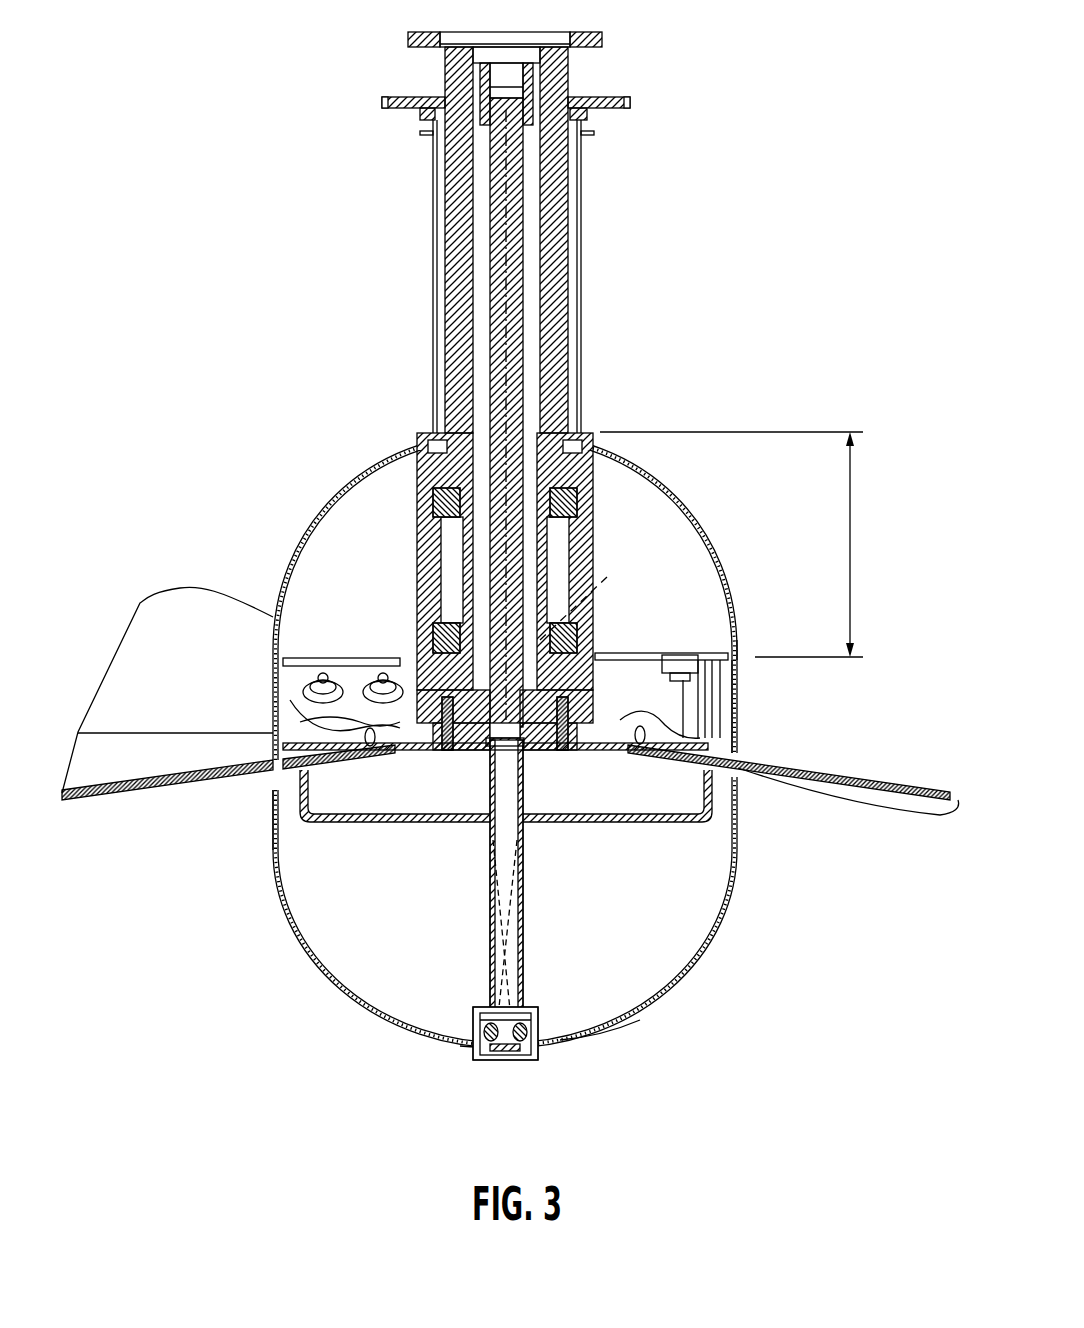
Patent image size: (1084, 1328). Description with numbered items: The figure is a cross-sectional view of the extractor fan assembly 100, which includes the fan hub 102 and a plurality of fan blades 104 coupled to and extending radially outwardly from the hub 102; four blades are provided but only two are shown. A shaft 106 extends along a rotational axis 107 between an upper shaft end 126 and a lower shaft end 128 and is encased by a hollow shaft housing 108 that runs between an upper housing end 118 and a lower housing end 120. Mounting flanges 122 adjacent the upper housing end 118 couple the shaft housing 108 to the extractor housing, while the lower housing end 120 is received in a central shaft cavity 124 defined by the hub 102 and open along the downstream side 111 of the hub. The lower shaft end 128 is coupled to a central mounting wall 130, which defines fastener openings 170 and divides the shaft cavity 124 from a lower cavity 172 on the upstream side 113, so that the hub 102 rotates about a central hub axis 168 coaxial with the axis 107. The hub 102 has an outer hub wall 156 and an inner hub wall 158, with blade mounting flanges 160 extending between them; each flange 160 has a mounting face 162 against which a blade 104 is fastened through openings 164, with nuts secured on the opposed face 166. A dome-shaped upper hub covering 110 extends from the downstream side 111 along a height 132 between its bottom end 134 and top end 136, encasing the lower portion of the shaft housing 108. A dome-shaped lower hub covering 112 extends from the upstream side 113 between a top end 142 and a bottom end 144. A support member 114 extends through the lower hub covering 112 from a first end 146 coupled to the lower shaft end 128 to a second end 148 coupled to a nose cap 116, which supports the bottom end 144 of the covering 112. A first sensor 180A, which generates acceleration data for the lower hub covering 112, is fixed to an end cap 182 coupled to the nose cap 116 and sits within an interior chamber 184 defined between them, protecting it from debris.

The extractor fan assembly 100 is at (142, 182).
The fan hub 102 is at (748, 731).
The fan blades 104 is at (118, 680).
The shaft 106 is at (504, 263).
The rotational axis 107 is at (508, 205).
The shaft housing 108 is at (433, 326).
The upper hub covering 110 is at (698, 473).
The downstream side 111 is at (738, 662).
The lower hub covering 112 is at (305, 948).
The upstream side 113 is at (612, 800).
The support member 114 is at (485, 890).
The nose cap 116 is at (470, 1052).
The upper housing end 118 is at (443, 78).
The lower housing end 120 is at (415, 690).
The mounting flanges 122 is at (381, 103).
The shaft cavity 124 is at (600, 658).
The upper shaft end 126 is at (530, 84).
The lower shaft end 128 is at (553, 752).
The central mounting wall 130 is at (578, 765).
The height 132 is at (851, 480).
The bottom end 134 is at (740, 650).
The top end 136 is at (582, 442).
The top end 142 is at (272, 806).
The bottom end 144 is at (582, 1033).
The first end 146 is at (492, 768).
The second end 148 is at (478, 1015).
The outer hub wall 156 is at (292, 706).
The inner hub wall 158 is at (622, 700).
The blade mounting flanges 160 is at (290, 748).
The mounting face 162 is at (375, 770).
The openings 164 is at (305, 668).
The opposed face 166 is at (300, 722).
The central hub axis 168 is at (592, 597).
The fastener openings 170 is at (418, 762).
The lower cavity 172 is at (402, 790).
The first sensor 180A is at (499, 1060).
The end cap 182 is at (532, 1066).
The interior chamber 184 is at (531, 1020).